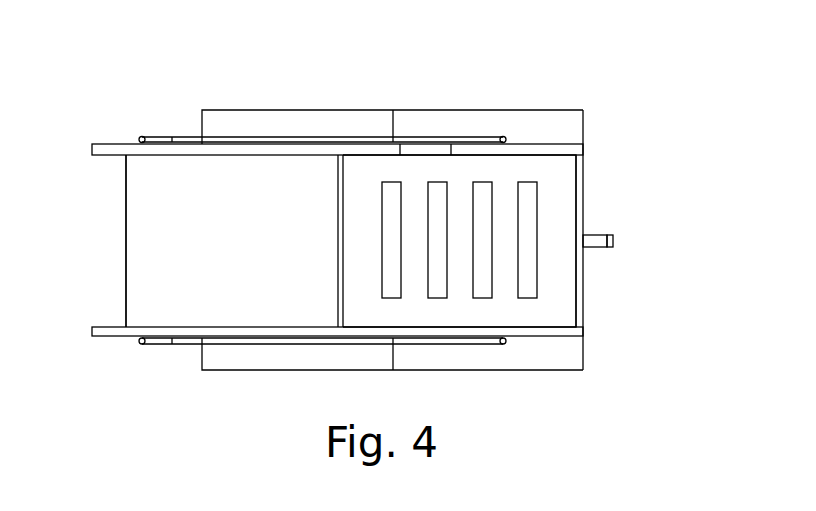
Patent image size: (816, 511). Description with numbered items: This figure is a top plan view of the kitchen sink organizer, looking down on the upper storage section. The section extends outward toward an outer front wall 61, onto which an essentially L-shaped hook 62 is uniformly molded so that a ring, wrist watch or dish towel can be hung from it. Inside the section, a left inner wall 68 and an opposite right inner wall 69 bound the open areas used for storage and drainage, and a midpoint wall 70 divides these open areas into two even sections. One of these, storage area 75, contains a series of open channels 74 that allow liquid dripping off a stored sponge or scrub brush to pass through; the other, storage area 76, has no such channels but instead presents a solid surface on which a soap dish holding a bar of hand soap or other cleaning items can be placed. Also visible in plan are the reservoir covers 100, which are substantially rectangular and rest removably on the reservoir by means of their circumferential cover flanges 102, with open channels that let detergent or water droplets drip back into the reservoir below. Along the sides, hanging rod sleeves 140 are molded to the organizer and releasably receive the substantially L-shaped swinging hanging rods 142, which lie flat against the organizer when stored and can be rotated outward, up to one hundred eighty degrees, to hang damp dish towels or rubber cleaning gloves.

The outer front wall 61 is at (584, 205).
The L-shaped hook 62 is at (613, 241).
The left inner wall 68 is at (252, 318).
The right inner wall 69 is at (246, 164).
The midpoint wall 70 is at (334, 218).
The open channels 74 is at (541, 290).
The storage area 75 is at (556, 268).
The storage area 76 is at (152, 302).
The reservoir covers 100 is at (336, 209).
The cover flange 102 is at (556, 110).
The hanging rod sleeves 140 is at (142, 344).
The swinging hanging rods 142 is at (356, 343).